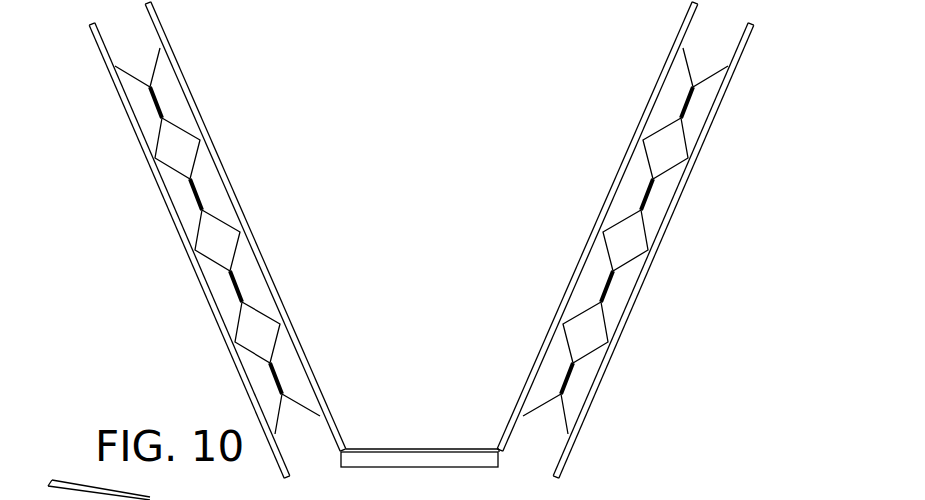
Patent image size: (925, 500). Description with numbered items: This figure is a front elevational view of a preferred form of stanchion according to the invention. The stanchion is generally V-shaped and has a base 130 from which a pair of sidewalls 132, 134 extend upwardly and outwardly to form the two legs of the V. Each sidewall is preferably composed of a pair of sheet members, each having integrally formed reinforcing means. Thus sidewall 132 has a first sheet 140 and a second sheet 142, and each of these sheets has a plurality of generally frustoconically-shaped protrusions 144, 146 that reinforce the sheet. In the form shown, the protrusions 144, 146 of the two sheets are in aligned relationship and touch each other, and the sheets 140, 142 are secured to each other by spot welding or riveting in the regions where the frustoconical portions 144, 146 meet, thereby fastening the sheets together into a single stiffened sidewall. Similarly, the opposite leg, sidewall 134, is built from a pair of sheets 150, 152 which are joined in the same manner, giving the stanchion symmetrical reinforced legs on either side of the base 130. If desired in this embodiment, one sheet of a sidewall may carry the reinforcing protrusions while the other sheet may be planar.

The base 130 is at (414, 426).
The sidewall 132 is at (200, 240).
The sidewall 134 is at (622, 240).
The first sheet 140 is at (177, 67).
The second sheet 142 is at (131, 126).
The frustoconically-shaped protrusion 144 is at (214, 203).
The frustoconically-shaped protrusion 146 is at (185, 203).
The sheet 150 is at (651, 113).
The sheet 152 is at (666, 238).